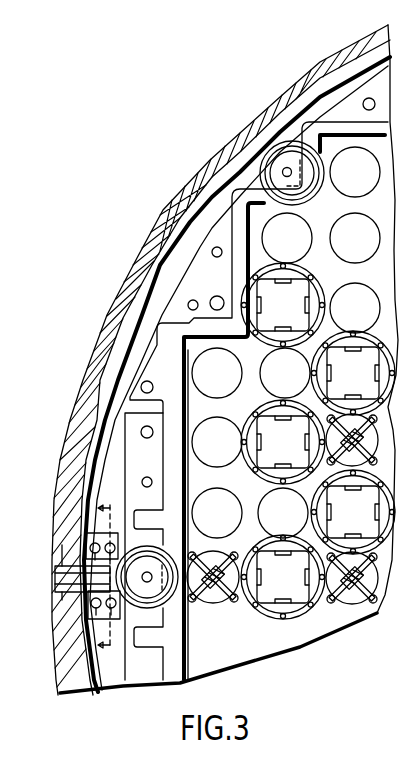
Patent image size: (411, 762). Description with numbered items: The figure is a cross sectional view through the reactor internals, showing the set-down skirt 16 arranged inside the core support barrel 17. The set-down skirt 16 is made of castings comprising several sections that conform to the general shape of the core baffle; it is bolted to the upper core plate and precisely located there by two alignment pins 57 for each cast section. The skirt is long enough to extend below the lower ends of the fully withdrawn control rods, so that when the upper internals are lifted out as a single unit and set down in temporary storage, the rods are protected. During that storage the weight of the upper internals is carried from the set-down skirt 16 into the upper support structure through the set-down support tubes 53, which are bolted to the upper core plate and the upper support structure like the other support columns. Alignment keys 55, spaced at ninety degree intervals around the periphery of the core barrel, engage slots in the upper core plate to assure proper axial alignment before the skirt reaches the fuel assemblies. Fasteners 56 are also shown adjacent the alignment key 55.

The set-down skirt 16 is at (161, 509).
The core support barrel 17 is at (233, 132).
The set-down support tube 53 is at (310, 198).
The alignment key 55 is at (62, 578).
The fastener pair 56 is at (88, 545).
The alignment pin 57 is at (214, 297).